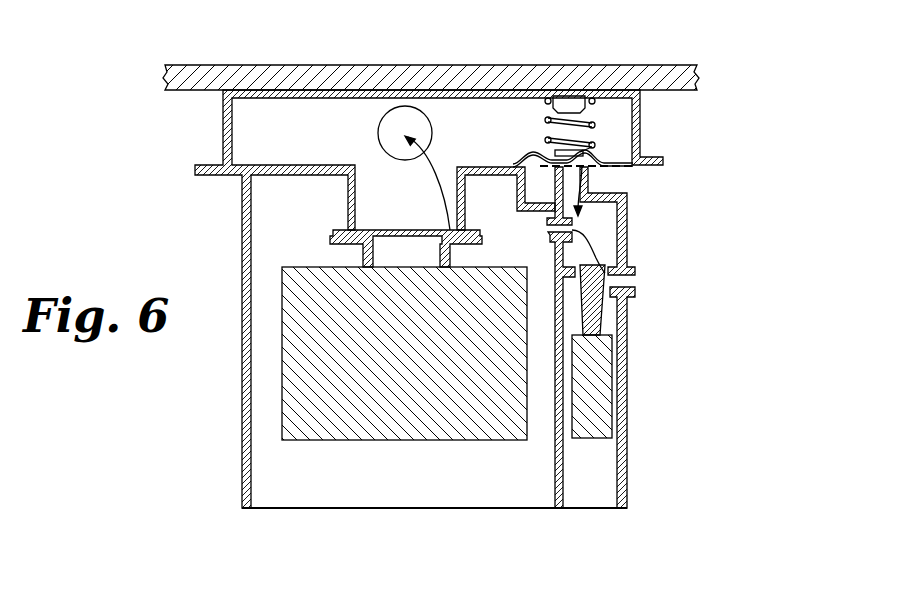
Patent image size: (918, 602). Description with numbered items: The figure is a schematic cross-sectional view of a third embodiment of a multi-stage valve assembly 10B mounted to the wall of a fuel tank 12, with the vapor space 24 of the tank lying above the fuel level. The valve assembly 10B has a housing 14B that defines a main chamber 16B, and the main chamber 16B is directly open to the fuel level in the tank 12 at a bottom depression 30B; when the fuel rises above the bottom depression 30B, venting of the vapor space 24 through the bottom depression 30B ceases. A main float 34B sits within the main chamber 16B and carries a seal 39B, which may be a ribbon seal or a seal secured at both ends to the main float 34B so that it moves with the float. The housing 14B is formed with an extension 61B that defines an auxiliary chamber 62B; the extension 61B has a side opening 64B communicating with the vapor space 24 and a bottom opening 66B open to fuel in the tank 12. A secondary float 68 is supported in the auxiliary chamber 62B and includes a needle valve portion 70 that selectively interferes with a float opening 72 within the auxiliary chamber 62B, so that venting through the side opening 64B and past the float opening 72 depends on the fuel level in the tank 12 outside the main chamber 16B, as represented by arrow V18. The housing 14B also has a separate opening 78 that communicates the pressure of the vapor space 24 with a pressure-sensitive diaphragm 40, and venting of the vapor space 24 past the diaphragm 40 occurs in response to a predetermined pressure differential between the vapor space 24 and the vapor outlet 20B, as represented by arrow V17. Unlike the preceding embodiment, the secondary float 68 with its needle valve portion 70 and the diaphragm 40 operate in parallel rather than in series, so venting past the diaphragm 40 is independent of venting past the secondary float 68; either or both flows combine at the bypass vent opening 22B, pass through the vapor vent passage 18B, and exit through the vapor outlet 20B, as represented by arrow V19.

The multi-stage valve assembly 10B is at (183, 350).
The tank 12 is at (612, 65).
The housing 14B is at (242, 287).
The main chamber 16B is at (268, 385).
The vapor vent passage 18B is at (457, 197).
The vapor outlet 20B is at (415, 125).
The bypass vent opening 22B is at (547, 238).
The vapor space 24 is at (760, 131).
The bottom depression 30B is at (252, 493).
The main float 34B is at (322, 422).
The seal 39B is at (405, 231).
The pressure-sensitive diaphragm 40 is at (585, 157).
The extension 61B is at (627, 228).
The auxiliary chamber 62B is at (594, 470).
The side opening 64B is at (602, 310).
The bottom opening 66B is at (612, 507).
The secondary float 68 is at (612, 387).
The needle valve portion 70 is at (632, 292).
The float opening 72 is at (618, 270).
The separate opening 78 is at (585, 168).
The arrow V17 is at (588, 165).
The arrow V18 is at (613, 283).
The arrow V19 is at (494, 230).